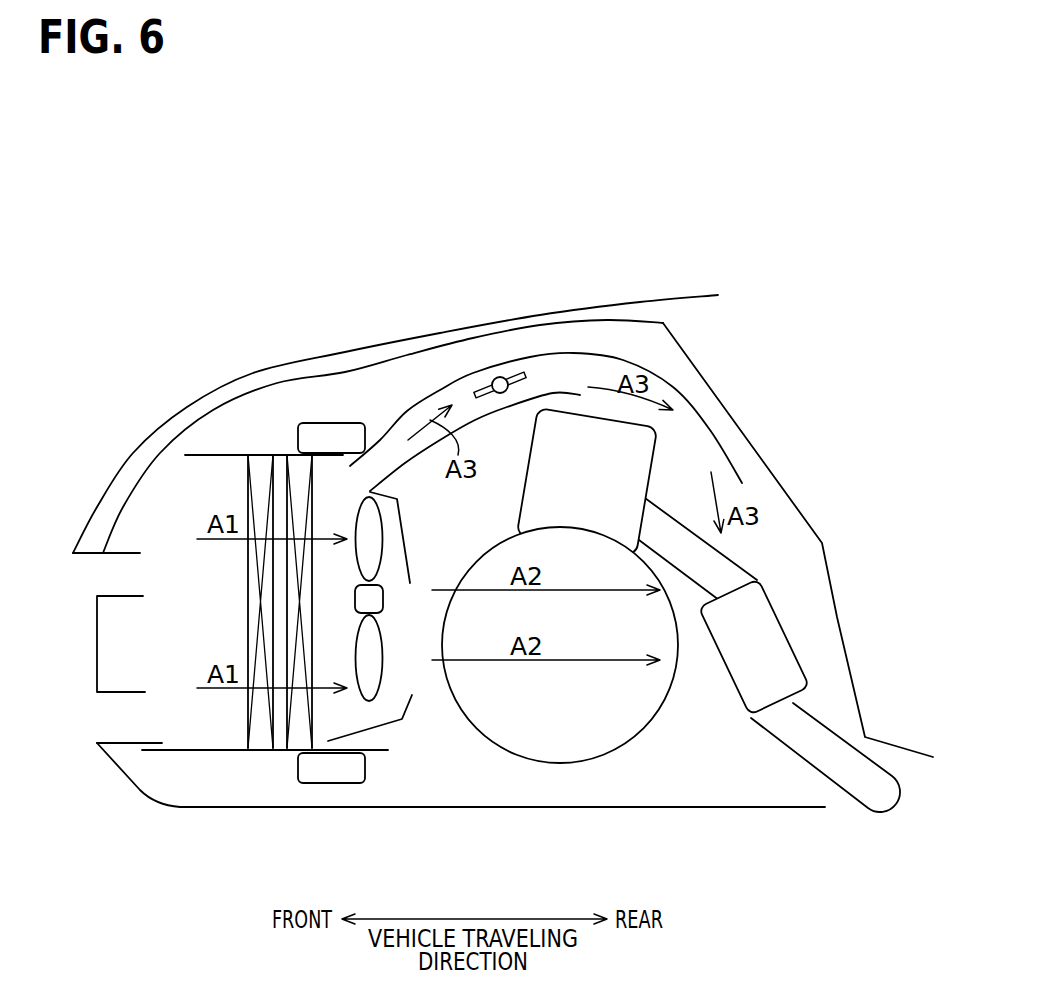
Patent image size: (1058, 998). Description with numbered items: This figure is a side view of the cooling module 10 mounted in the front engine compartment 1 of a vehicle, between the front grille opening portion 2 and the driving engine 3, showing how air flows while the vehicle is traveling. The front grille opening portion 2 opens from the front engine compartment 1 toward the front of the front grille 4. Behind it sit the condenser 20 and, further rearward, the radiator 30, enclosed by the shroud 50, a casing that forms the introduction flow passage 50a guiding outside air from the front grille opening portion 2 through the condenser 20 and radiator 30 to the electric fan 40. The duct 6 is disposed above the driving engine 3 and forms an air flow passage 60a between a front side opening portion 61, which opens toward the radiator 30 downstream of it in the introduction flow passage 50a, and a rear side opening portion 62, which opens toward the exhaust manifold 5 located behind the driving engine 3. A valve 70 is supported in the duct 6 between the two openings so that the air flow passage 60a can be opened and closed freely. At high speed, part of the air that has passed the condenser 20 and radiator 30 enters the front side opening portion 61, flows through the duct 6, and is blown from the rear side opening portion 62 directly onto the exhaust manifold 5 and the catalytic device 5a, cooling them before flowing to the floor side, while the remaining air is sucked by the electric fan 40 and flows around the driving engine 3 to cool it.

The front engine compartment 1 is at (655, 773).
The front grille opening portion 2 is at (84, 573).
The driving engine 3 is at (535, 765).
The front grille 4 is at (142, 792).
The exhaust manifold 5 is at (690, 588).
The catalytic device 5a is at (788, 626).
The duct 6 is at (580, 352).
The cooling module 10 is at (217, 767).
The condenser 20 is at (257, 743).
The radiator 30 is at (294, 743).
The electric fan 40 is at (383, 660).
The shroud 50 is at (180, 752).
The introduction flow passage 50a is at (337, 569).
The air flow passage 60a is at (458, 390).
The front side opening portion 61 is at (365, 470).
The rear side opening portion 62 is at (685, 424).
The valve 70 is at (505, 377).